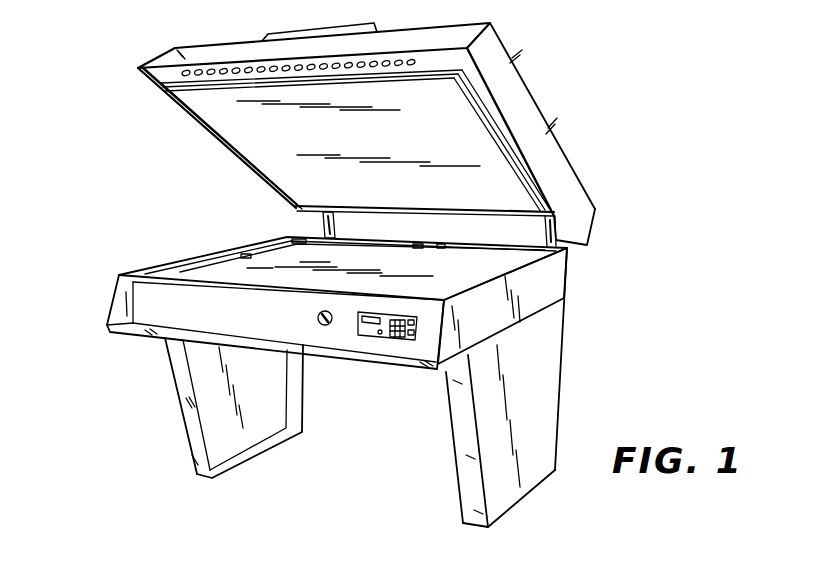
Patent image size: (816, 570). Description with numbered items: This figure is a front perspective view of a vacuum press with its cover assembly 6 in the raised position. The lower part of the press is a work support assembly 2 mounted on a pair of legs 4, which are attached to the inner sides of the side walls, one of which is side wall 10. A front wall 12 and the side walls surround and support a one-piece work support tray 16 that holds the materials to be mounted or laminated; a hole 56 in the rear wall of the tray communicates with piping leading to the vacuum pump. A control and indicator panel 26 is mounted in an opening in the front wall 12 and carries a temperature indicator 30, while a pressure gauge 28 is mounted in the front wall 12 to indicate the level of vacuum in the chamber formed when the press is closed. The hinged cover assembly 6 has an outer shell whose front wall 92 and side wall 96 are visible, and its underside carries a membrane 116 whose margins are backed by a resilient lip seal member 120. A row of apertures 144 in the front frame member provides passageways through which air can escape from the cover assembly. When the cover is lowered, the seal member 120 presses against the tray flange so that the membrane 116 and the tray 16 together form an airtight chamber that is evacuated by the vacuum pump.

The work support assembly 2 is at (576, 268).
The legs 4 is at (188, 398).
The cover assembly 6 is at (562, 144).
The side wall 10 is at (548, 295).
The front wall 12 is at (127, 303).
The work support tray 16 is at (261, 262).
The control and indicator panel 26 is at (393, 341).
The pressure gauge 28 is at (318, 318).
The temperature indicator 30 is at (358, 320).
The hole 56 is at (399, 256).
The front wall 92 is at (173, 50).
The side wall 96 is at (514, 100).
The membrane 116 is at (238, 118).
The lip seal member 120 is at (234, 163).
The apertures 144 is at (275, 69).